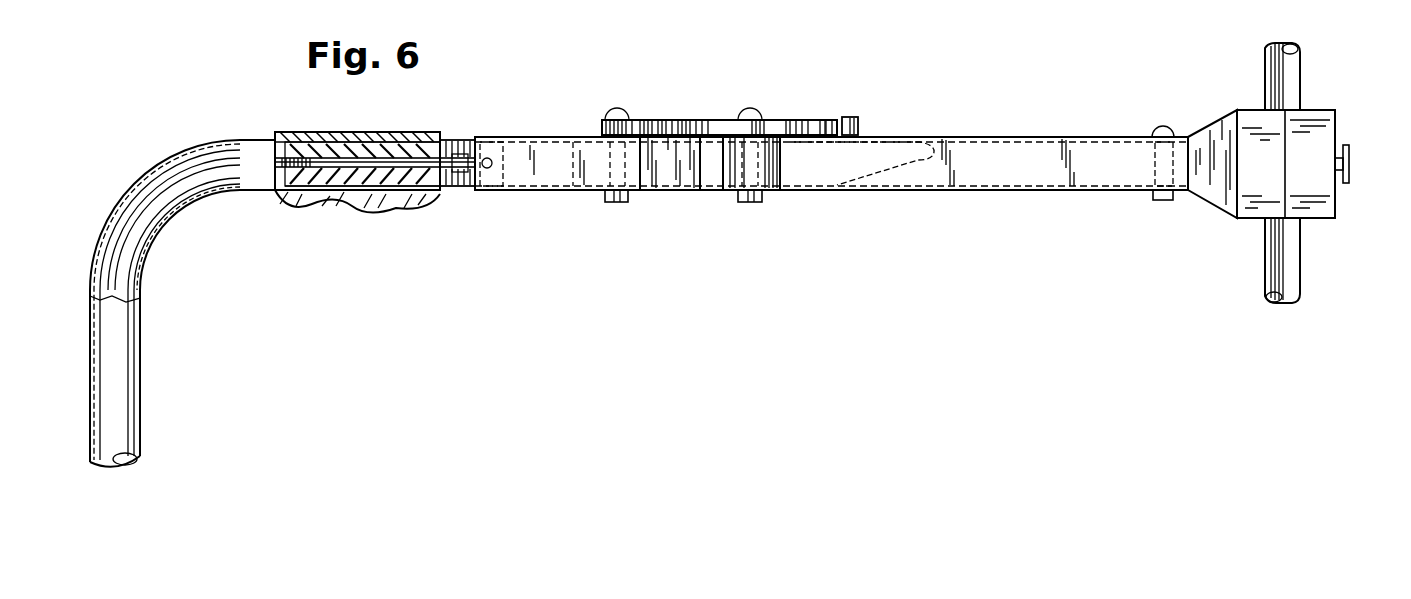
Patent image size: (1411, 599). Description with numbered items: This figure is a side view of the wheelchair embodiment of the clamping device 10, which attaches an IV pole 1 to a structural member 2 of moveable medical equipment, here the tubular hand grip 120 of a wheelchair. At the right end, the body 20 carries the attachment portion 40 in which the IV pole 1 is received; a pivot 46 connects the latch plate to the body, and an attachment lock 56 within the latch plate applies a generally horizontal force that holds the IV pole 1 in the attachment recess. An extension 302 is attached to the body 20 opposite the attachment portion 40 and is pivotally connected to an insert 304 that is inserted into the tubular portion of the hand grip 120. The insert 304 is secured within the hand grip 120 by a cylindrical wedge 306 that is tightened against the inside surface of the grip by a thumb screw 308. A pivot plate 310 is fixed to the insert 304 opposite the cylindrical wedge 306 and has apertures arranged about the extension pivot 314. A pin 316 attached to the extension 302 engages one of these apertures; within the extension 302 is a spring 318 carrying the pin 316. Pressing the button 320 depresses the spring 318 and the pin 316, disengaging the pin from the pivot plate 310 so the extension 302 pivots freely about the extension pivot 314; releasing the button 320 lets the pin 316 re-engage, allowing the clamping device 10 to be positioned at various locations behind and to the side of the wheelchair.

The IV pole 1 is at (1265, 72).
The structural member 2 is at (160, 170).
The clamping device 10 is at (1226, 290).
The body 20 is at (1250, 220).
The attachment portion 40 is at (1318, 220).
The pivot 46 is at (1350, 156).
The attachment lock 56 is at (1350, 172).
The wheelchair hand grip 120 is at (350, 134).
The extension 302 is at (964, 136).
The insert 304 is at (498, 192).
The cylindrical wedge 306 is at (332, 134).
The thumb screw 308 is at (466, 138).
The pivot plate 310 is at (660, 108).
The extension pivot 314 is at (768, 104).
The pin 316 is at (826, 120).
The spring 318 is at (884, 190).
The button 320 is at (858, 120).